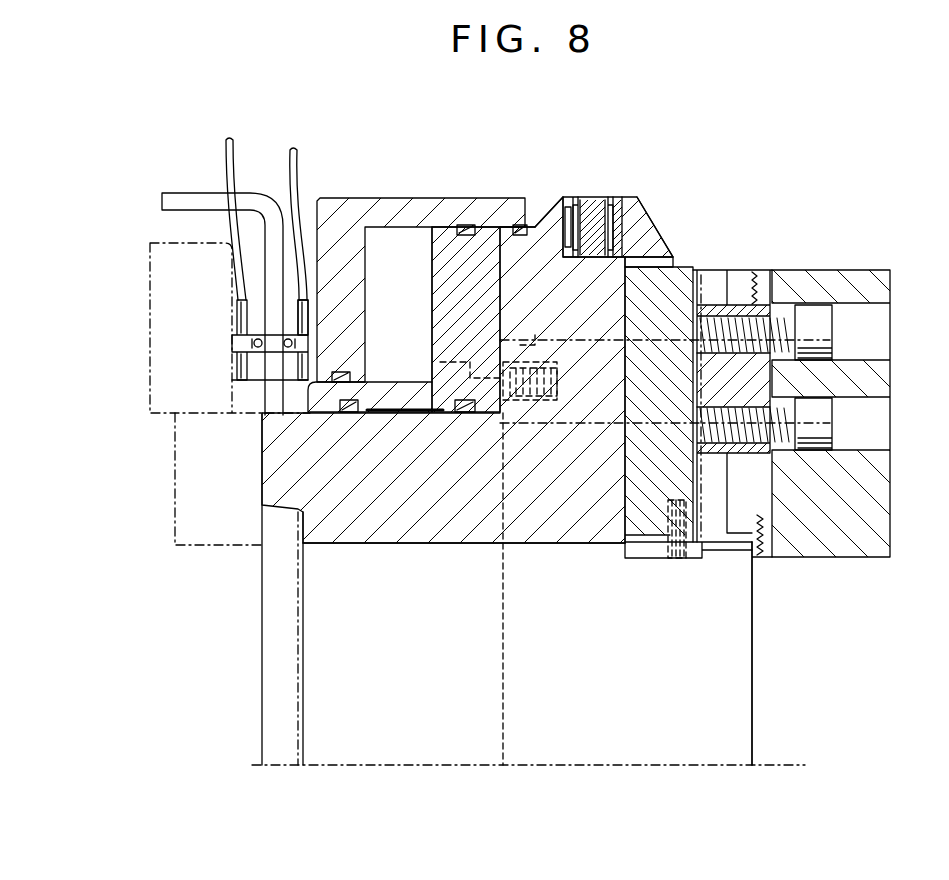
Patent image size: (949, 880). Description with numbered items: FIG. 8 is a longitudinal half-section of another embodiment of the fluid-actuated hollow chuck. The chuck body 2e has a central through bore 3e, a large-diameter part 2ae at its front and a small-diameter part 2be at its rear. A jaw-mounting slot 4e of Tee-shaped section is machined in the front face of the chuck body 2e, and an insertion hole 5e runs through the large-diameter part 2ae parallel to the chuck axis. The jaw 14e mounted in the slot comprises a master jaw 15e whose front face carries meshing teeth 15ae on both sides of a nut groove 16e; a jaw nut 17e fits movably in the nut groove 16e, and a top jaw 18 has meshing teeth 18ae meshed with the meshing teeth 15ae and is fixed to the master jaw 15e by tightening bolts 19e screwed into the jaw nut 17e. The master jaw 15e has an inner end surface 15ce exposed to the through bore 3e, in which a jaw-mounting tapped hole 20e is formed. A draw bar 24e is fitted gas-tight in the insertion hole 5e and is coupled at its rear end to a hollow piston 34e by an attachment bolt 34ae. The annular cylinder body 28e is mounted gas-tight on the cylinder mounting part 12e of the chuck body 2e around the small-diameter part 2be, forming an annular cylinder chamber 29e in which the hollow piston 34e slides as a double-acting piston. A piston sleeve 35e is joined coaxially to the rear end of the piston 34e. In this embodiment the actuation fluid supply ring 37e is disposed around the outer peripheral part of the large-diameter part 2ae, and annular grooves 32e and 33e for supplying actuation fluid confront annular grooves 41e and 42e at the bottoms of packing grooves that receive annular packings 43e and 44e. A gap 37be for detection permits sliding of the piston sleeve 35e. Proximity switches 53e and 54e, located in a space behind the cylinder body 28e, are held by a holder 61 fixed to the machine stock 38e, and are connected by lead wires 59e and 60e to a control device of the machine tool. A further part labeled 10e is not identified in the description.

The chuck body 2e is at (437, 528).
The large-diameter part 2ae is at (537, 212).
The small-diameter part 2be is at (298, 497).
The through bore 3e is at (365, 545).
The jaw-mounting slot 4e is at (723, 290).
The insertion hole 5e is at (548, 342).
The mold 10e is at (172, 488).
The cylinder mounting part 12e is at (513, 210).
The jaw 14e is at (855, 258).
The master jaw 15e is at (680, 283).
The meshing teeth 15ae is at (760, 525).
The inner end surface 15ce is at (643, 560).
The nut groove 16e is at (747, 285).
The jaw nut 17e is at (760, 378).
The top jaw 18 is at (873, 538).
The meshing teeth 18ae is at (757, 557).
The tightening bolt 19e is at (827, 328).
The jaw-mounting tapped hole 20e is at (687, 557).
The draw bar 24e is at (582, 342).
The cylinder body 28e is at (342, 210).
The cylinder chamber 29e is at (410, 237).
The annular groove 32e is at (640, 235).
The annular groove 33e is at (555, 223).
The hollow piston 34e is at (443, 237).
The attachment bolt 34ae is at (477, 418).
The piston sleeve 35e is at (392, 390).
The actuation fluid supply ring 37e is at (592, 218).
The gap for detection 37be is at (267, 400).
The machine stock 38e is at (150, 312).
The annular groove 41e is at (613, 213).
The annular groove 42e is at (608, 222).
The annular packing 43e is at (653, 228).
The annular packing 44e is at (573, 215).
The proximity switch 53e is at (302, 320).
The proximity switch 54e is at (238, 312).
The lead wire 59e is at (293, 150).
The lead wire 60e is at (226, 170).
The holder 61 is at (250, 193).